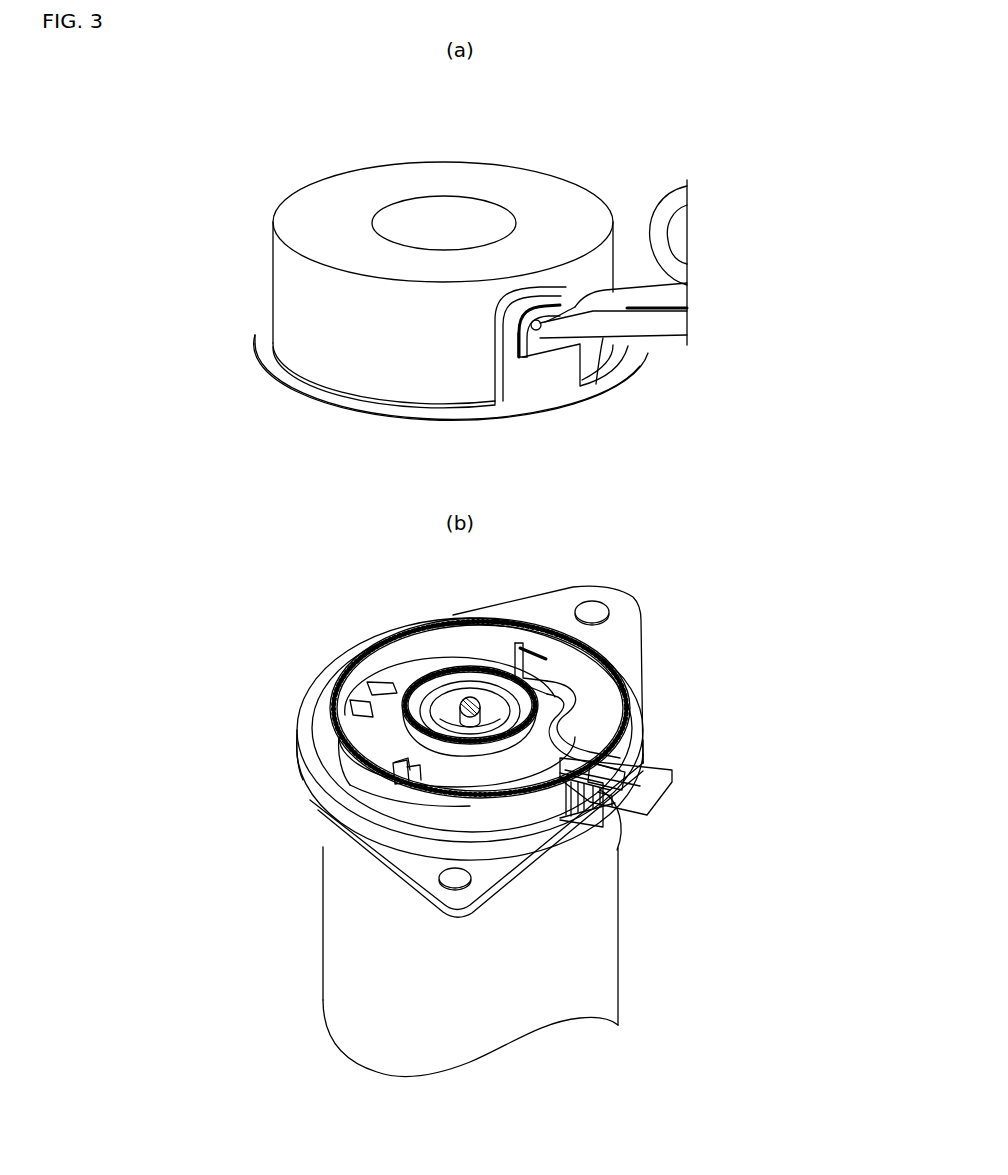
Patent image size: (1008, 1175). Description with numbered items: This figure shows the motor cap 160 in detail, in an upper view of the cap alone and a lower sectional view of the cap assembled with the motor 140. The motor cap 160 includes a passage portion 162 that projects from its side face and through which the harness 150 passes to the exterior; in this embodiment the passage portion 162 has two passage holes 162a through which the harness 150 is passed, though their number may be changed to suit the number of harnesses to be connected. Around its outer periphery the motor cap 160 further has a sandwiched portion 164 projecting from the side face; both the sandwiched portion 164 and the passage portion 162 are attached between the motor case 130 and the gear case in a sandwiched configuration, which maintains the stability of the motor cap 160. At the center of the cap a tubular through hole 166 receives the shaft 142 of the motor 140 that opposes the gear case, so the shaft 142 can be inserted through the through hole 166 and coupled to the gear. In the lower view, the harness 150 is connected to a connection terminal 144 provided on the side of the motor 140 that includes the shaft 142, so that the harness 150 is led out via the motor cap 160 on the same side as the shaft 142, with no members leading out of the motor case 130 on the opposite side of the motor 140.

The motor case 130 is at (307, 808).
The motor 140 is at (410, 676).
The shaft 142 is at (470, 705).
The connection terminal 144 is at (520, 645).
The harness 150 is at (660, 345).
The motor cap 160 is at (541, 157).
The passage portion 162 is at (540, 393).
The passage holes 162a is at (558, 296).
The sandwiched portion 164 is at (300, 396).
The tubular through hole 166 is at (405, 213).